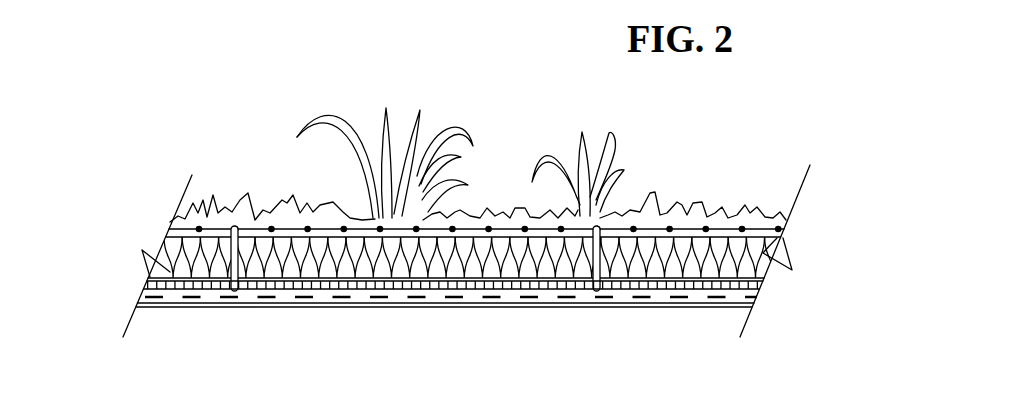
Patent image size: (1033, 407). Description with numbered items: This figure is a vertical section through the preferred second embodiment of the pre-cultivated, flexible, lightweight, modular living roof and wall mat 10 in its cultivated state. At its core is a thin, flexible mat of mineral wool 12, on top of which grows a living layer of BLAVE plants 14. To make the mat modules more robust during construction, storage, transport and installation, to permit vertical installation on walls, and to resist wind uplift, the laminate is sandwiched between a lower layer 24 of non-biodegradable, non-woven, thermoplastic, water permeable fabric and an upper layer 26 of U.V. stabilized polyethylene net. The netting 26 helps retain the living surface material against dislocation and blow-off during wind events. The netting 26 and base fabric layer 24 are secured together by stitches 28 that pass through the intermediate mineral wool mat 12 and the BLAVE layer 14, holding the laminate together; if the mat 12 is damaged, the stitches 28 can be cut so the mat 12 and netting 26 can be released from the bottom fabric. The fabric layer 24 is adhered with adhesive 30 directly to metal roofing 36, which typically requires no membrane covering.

The living roof and wall mat 10 is at (281, 86).
The mat of mineral wool 12 is at (190, 251).
The living layer of BLAVE plants 14 is at (199, 228).
The lower layer of non-woven fabric 24 is at (750, 285).
The upper layer of polyethylene net 26 is at (187, 220).
The stitches 28 is at (235, 227).
The adhesive 30 is at (660, 298).
The metal roofing 36 is at (453, 304).